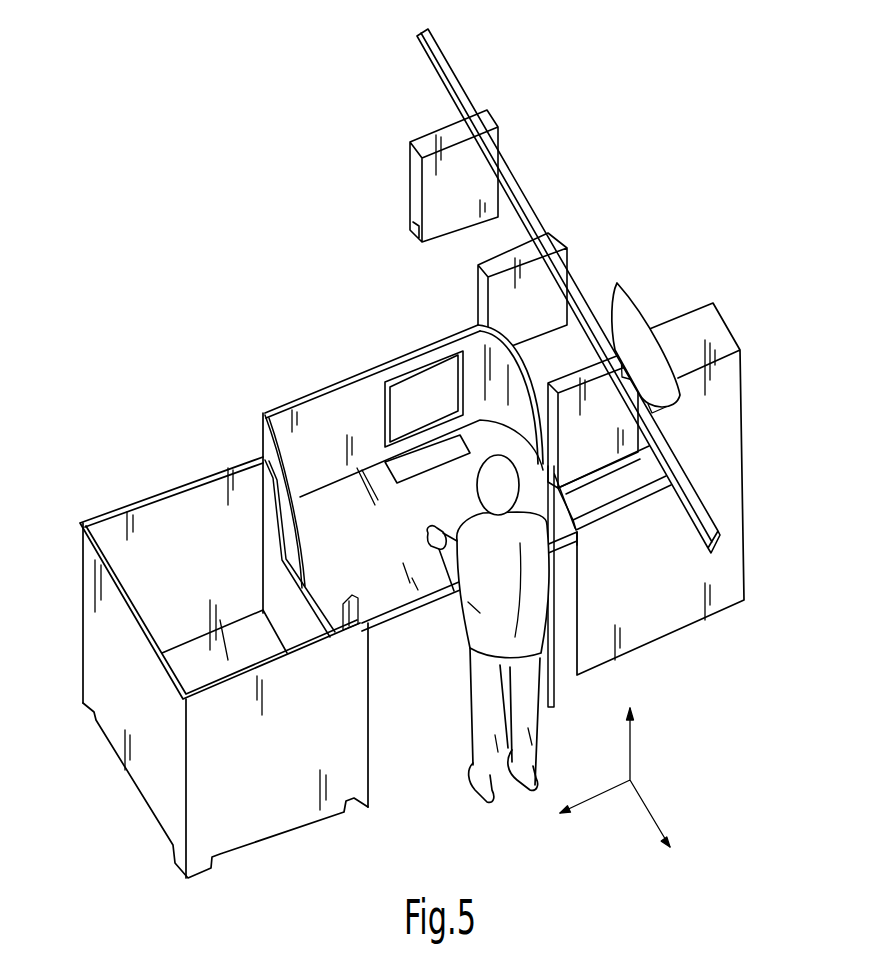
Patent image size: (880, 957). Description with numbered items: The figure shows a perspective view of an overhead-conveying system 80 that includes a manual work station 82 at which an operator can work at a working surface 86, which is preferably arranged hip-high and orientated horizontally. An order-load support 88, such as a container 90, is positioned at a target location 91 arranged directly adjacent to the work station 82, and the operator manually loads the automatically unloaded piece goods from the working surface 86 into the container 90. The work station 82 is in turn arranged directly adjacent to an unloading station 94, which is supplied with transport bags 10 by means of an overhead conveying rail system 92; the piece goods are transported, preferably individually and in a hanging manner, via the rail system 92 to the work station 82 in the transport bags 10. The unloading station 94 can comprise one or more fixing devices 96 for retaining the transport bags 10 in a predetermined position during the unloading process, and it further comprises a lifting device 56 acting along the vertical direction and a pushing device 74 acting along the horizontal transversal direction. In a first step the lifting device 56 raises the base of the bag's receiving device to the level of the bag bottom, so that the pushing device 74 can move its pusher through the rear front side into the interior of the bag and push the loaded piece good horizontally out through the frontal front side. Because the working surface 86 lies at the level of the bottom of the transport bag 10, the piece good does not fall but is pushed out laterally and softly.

The overhead-conveying system 80 is at (153, 268).
The work station 82 is at (353, 348).
The working surface 86 is at (379, 578).
The order-load support 88 is at (160, 483).
The container 90 is at (82, 628).
The target location 91 is at (262, 855).
The rail system 92 is at (458, 70).
The unloading station 94 is at (688, 281).
The fixing device 96 is at (612, 295).
The pushing device 74 is at (666, 412).
The lifting device 56 is at (600, 487).
The transport bag 10 is at (438, 244).